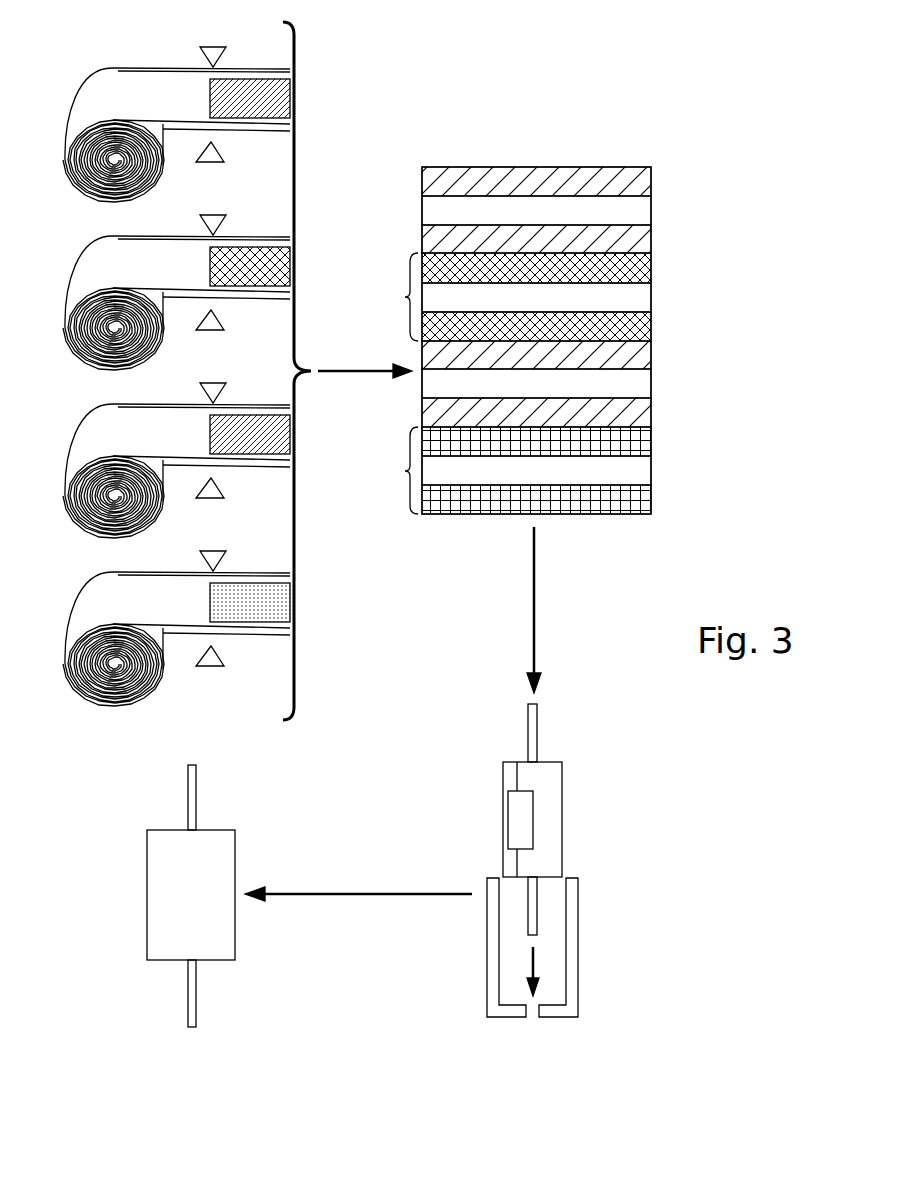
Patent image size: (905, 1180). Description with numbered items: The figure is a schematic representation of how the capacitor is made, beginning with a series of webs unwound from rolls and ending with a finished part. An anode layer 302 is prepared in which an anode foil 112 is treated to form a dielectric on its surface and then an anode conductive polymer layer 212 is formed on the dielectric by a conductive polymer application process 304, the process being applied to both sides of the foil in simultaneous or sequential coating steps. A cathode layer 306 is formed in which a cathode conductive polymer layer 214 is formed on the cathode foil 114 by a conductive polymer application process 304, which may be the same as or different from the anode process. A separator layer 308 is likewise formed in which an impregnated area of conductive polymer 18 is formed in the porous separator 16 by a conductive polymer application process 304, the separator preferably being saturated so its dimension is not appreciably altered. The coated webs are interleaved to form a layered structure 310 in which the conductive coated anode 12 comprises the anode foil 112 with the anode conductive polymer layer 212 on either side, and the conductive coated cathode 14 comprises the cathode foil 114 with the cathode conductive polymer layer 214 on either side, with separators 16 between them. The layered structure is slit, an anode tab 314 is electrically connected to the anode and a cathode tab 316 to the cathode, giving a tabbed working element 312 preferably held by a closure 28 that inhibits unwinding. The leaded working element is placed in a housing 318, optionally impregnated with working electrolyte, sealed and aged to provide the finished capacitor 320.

The conductive coated anode 12 is at (397, 297).
The conductive coated cathode 14 is at (397, 470).
The separator 16 is at (116, 80).
The conductive polymer 18 is at (257, 92).
The closure 28 is at (520, 822).
The anode foil 112 is at (115, 247).
The cathode foil 114 is at (115, 582).
The anode conductive polymer layer 212 is at (259, 266).
The cathode conductive polymer layer 214 is at (259, 602).
The anode layer 302 is at (272, 314).
The conductive polymer application process 304 is at (217, 57).
The cathode layer 306 is at (272, 650).
The separator cutting 308 is at (272, 146).
The layered structure 310 is at (563, 143).
The tabbed working element 312 is at (585, 811).
The anode tab 314 is at (532, 737).
The cathode tab 316 is at (533, 908).
The housing 318 is at (573, 988).
The finished capacitor 320 is at (198, 877).